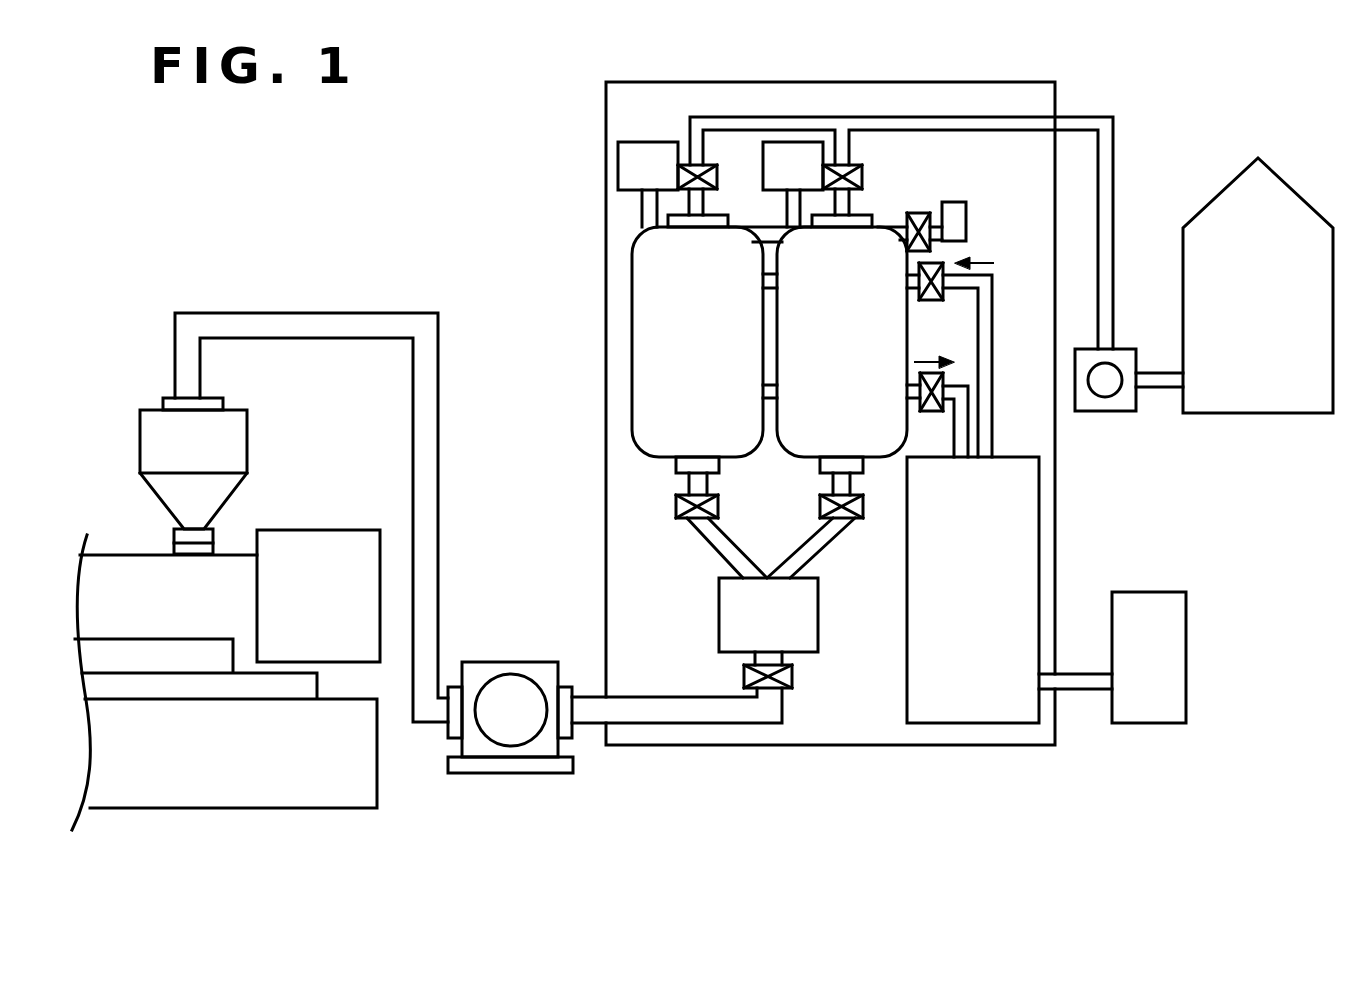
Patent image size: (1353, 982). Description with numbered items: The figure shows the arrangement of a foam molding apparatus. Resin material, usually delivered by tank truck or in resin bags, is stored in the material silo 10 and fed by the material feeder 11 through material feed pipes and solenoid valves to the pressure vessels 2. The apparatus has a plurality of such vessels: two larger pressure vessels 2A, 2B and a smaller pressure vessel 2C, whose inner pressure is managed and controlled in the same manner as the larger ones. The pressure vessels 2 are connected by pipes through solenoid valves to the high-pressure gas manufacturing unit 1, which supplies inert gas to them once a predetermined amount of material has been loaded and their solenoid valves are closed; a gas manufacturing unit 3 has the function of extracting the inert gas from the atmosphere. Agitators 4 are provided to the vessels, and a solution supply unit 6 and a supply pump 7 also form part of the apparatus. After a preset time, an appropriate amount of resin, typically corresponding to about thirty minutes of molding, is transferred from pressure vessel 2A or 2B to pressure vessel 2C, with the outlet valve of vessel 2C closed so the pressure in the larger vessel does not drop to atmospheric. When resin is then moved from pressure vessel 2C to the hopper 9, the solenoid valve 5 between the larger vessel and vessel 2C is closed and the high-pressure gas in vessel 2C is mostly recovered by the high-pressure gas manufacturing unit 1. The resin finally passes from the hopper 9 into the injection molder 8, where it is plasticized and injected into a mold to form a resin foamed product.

The high-pressure gas manufacturing unit 1 is at (973, 707).
The pressure vessels 2 is at (726, 392).
The pressure vessel 2A is at (658, 355).
The pressure vessel 2B is at (880, 410).
The pressure vessel 2C is at (797, 628).
The gas manufacturing unit 3 is at (1149, 707).
The agitators 4 is at (650, 165).
The solenoid valve 5 is at (676, 500).
The solution supply unit 6 is at (953, 213).
The supply pump 7 is at (508, 687).
The injection molder 8 is at (320, 782).
The hopper 9 is at (155, 427).
The material silo 10 is at (1292, 220).
The material feeder 11 is at (1107, 387).